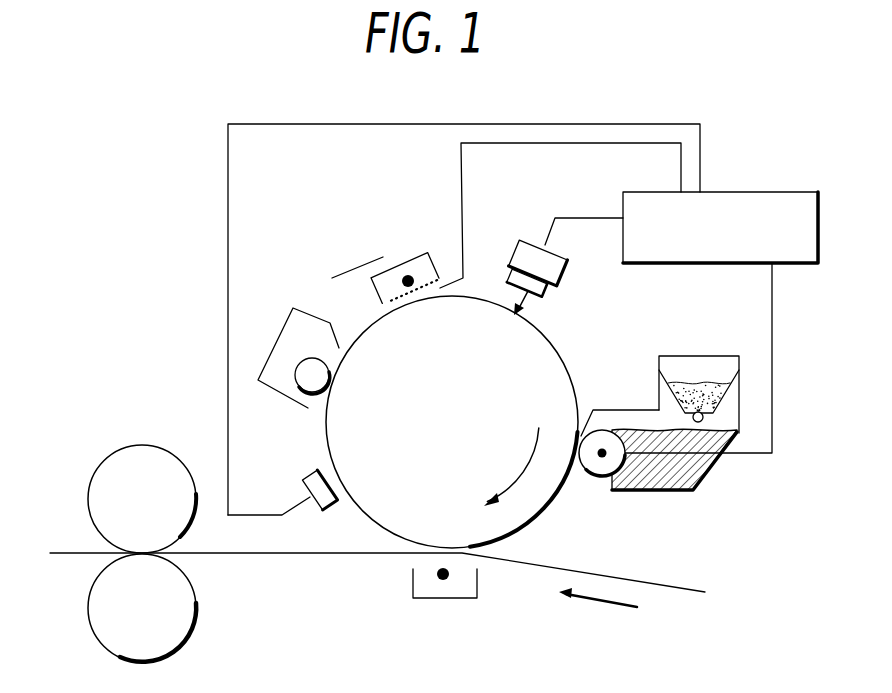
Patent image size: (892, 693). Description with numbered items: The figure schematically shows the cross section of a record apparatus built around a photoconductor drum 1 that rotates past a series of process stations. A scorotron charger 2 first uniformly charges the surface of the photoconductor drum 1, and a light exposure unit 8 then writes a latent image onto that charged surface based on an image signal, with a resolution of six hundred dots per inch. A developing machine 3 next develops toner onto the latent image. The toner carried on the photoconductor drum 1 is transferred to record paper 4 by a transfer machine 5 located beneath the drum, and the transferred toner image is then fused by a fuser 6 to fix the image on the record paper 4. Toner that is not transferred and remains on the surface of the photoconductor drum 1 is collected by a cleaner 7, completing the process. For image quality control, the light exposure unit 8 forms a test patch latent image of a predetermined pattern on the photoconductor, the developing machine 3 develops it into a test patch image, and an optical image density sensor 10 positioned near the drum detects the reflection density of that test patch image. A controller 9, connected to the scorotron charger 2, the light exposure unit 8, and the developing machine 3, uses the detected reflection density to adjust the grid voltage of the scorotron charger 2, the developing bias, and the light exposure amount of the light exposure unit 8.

The photoconductor drum 1 is at (532, 510).
The scorotron charger 2 is at (393, 267).
The developing machine 3 is at (620, 410).
The record paper 4 is at (675, 590).
The transfer machine 5 is at (443, 600).
The fuser 6 is at (142, 450).
The cleaner 7 is at (278, 340).
The light exposure unit 8 is at (515, 255).
The controller 9 is at (758, 190).
The optical image density sensor 10 is at (313, 473).